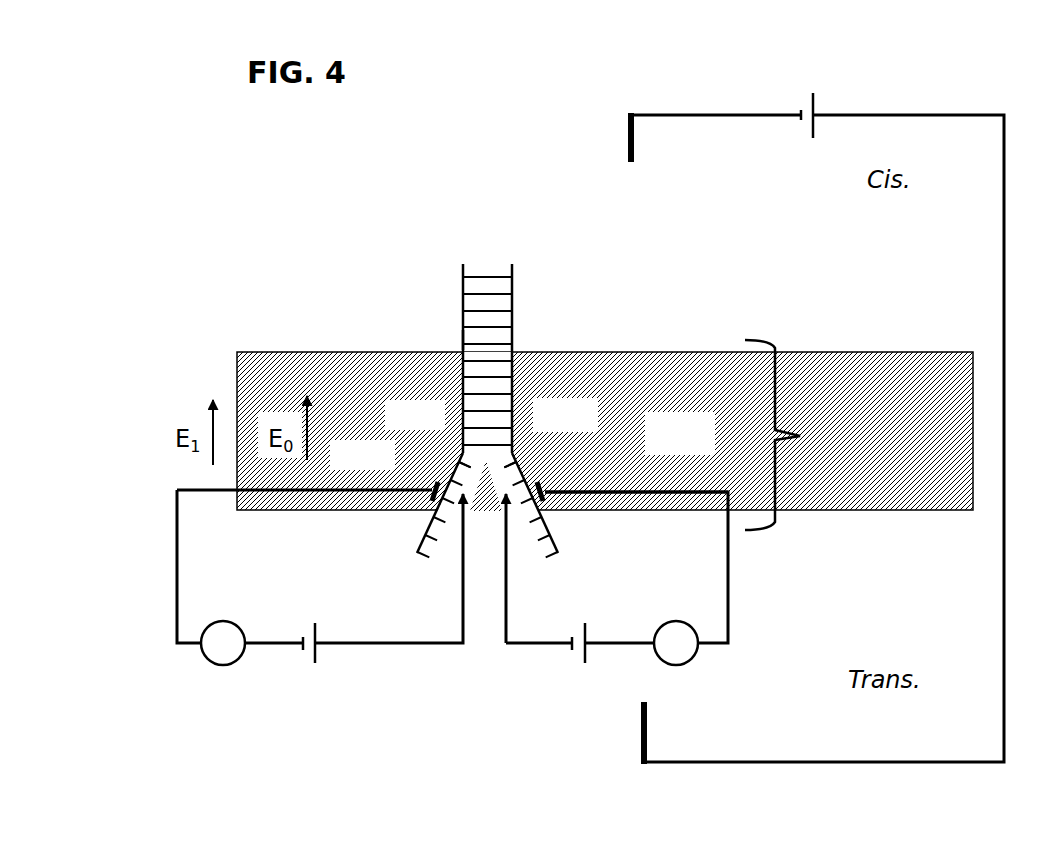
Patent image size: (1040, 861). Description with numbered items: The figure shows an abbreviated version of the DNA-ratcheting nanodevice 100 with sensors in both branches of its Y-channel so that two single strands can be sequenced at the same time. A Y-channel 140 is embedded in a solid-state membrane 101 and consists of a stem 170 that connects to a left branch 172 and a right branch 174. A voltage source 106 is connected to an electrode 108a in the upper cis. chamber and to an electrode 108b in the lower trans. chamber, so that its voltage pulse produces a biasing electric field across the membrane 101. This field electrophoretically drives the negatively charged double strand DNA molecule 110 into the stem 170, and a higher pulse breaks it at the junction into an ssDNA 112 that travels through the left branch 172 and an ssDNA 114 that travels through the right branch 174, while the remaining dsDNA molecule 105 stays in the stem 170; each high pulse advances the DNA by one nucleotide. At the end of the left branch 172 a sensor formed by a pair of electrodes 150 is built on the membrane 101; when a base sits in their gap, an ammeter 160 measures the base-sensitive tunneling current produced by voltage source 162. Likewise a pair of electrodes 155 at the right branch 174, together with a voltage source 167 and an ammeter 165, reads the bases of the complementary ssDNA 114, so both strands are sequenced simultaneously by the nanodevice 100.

The DNA-ratcheting nanodevice 100 is at (97, 94).
The membrane 101 is at (252, 383).
The remaining dsDNA molecule 105 is at (514, 298).
The voltage source 106 is at (798, 93).
The electrode 108a is at (627, 135).
The electrode 108b is at (642, 740).
The double strand DNA molecule 110 is at (484, 256).
The ssDNA 112 is at (418, 532).
The ssDNA 114 is at (553, 530).
The Y-channel 140 is at (802, 436).
The pair of electrodes 150 is at (422, 481).
The pair of electrodes 155 is at (556, 482).
The ammeter 160 is at (222, 667).
The voltage source 162 is at (314, 663).
The ammeter 165 is at (690, 661).
The voltage source 167 is at (585, 663).
The stem 170 is at (461, 346).
The left branch 172 is at (450, 458).
The right branch 174 is at (530, 458).